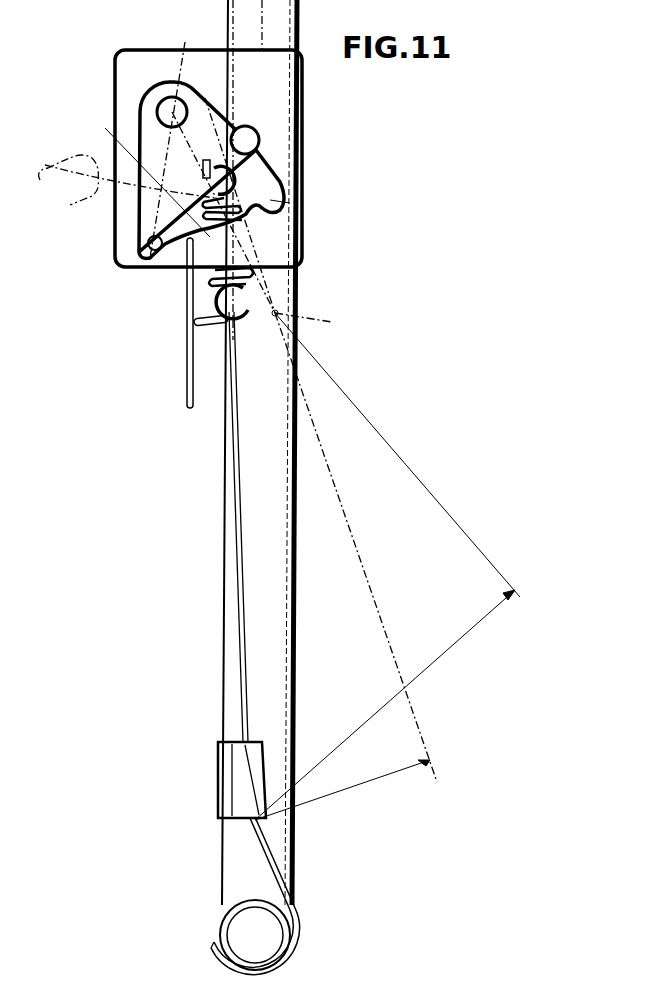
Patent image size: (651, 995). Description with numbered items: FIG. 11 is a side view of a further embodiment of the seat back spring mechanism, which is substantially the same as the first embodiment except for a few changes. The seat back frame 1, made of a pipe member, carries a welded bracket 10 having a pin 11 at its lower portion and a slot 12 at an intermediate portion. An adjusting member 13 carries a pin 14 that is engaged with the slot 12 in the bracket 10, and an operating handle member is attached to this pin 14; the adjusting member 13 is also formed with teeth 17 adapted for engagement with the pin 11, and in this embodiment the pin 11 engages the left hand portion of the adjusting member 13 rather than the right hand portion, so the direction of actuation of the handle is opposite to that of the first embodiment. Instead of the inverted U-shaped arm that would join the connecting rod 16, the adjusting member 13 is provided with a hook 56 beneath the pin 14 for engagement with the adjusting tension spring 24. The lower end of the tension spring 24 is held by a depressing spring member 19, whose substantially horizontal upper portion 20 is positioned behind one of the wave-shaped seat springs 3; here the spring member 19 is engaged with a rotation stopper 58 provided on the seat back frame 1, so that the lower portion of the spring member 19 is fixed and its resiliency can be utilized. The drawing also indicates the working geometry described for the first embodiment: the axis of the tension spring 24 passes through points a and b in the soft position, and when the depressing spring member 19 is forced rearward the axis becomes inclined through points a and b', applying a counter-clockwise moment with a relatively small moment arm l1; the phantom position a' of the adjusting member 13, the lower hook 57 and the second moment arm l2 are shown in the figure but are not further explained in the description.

The seat back frame 1 is at (225, 700).
The seat spring 3 is at (186, 390).
The bracket 10 is at (117, 80).
The pin 11 is at (158, 262).
The slot 12 is at (212, 165).
The adjusting member 13 is at (145, 212).
The pin 14 is at (157, 112).
The connecting rod 16 is at (259, 140).
The teeth 17 is at (290, 224).
The depressing spring member 19 is at (240, 577).
The horizontal upper portion 20 is at (196, 322).
The tension spring 24 is at (292, 278).
The hook 56 is at (248, 166).
The hook wire 57 is at (293, 940).
The rotation stopper 58 is at (220, 787).
The point a is at (303, 198).
The position a' is at (127, 180).
The point b is at (237, 319).
The point b' is at (396, 538).
The moment arm l1 is at (342, 790).
The length l2 is at (385, 705).